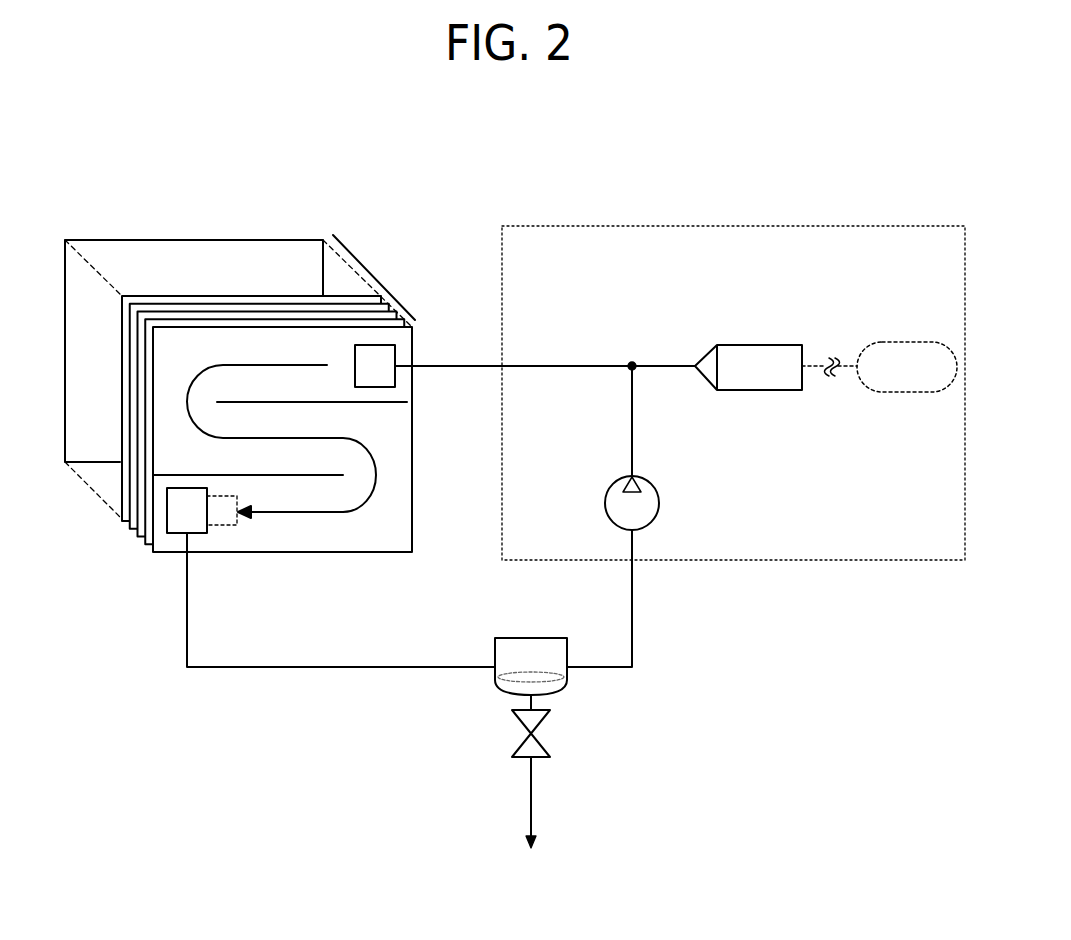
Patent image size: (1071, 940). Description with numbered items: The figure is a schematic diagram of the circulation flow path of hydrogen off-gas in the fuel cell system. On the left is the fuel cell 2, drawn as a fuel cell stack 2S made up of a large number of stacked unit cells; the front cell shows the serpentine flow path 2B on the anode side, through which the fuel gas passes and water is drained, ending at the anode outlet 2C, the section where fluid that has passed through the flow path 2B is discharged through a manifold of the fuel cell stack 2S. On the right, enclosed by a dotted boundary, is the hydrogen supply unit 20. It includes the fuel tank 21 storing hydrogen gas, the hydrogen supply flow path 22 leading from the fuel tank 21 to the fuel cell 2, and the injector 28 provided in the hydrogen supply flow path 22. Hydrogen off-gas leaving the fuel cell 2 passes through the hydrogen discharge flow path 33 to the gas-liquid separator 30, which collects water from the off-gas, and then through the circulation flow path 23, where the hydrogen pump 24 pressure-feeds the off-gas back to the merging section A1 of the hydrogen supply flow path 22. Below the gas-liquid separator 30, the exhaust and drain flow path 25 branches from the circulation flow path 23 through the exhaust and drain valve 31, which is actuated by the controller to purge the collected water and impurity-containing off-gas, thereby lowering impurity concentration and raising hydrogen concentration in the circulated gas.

The fuel cell 2 is at (100, 555).
The fuel cell stack 2S is at (377, 279).
The flow path on the anode side 2B is at (335, 422).
The anode outlet 2C is at (205, 510).
The hydrogen supply unit 20 is at (831, 226).
The fuel tank 21 is at (900, 340).
The hydrogen supply flow path 22 is at (529, 363).
The circulation flow path 23 is at (633, 430).
The hydrogen pump 24 is at (657, 498).
The exhaust and drain flow path 25 is at (532, 787).
The injector 28 is at (760, 343).
The gas-liquid separator 30 is at (530, 638).
The exhaust and drain valve 31 is at (545, 738).
The hydrogen discharge flow path 33 is at (278, 668).
The merging section A1 is at (633, 360).